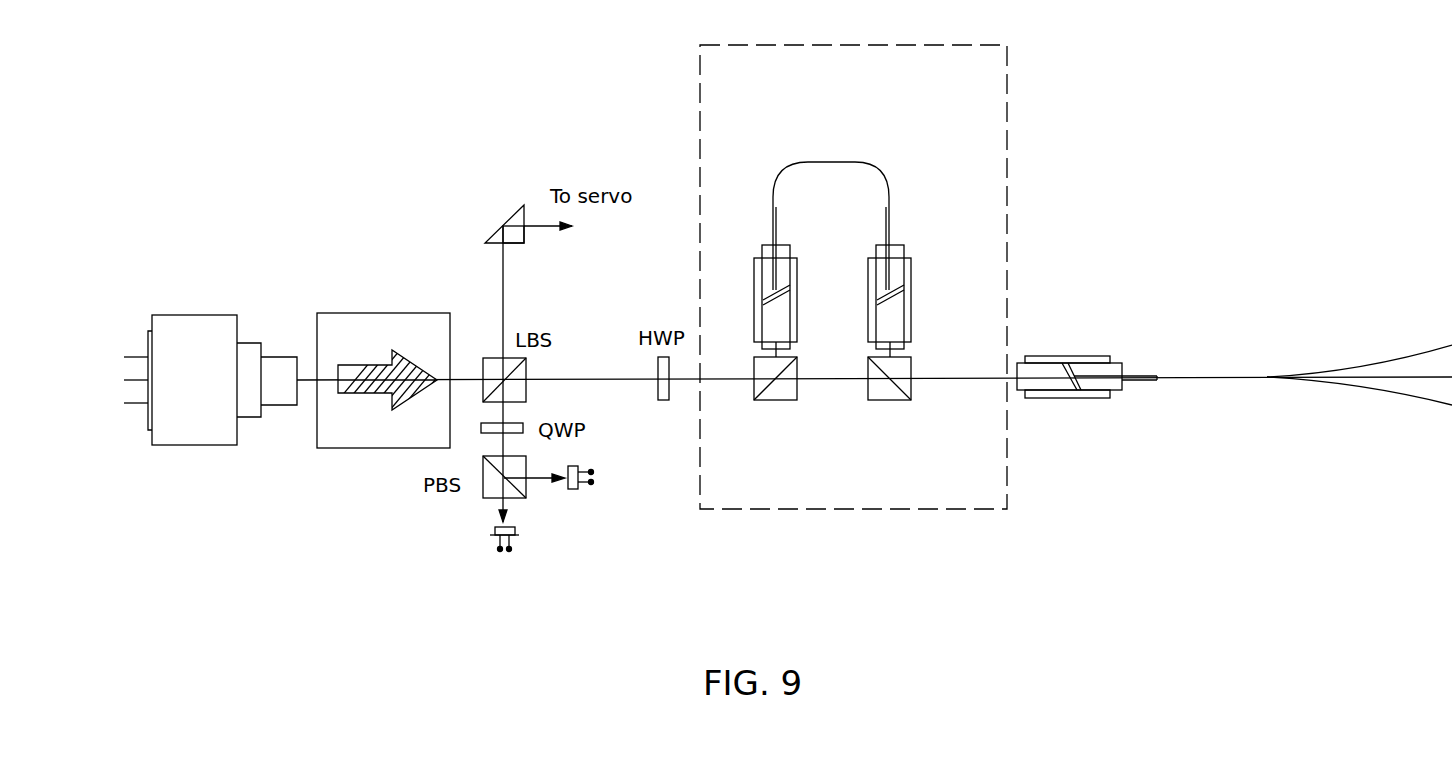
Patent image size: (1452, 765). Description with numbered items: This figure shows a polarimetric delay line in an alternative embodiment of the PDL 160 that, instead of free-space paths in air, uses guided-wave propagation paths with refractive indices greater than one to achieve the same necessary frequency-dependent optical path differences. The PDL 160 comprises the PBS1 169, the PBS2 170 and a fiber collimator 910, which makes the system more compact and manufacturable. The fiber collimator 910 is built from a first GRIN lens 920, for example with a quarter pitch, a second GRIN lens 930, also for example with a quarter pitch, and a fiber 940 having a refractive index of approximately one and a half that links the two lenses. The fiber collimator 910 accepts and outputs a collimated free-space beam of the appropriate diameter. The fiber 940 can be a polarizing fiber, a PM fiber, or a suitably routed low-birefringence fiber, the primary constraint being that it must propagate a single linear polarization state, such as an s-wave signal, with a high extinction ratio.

The PDL 160 is at (1007, 472).
The PBS1 169 is at (775, 400).
The PBS2 170 is at (892, 400).
The fiber collimator 910 is at (758, 253).
The first GRIN lens 920 is at (777, 327).
The second GRIN lens 930 is at (892, 325).
The fiber 940 is at (882, 172).